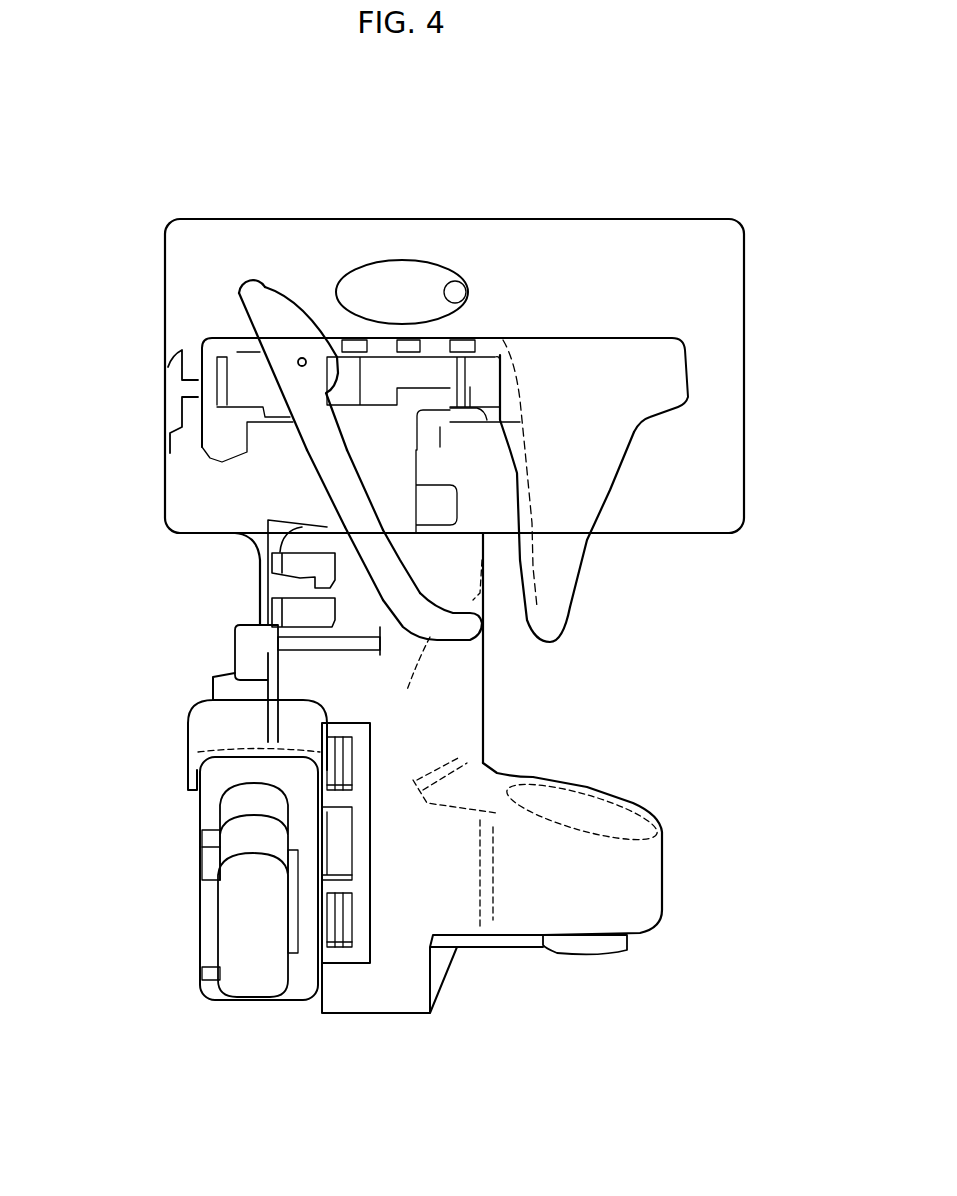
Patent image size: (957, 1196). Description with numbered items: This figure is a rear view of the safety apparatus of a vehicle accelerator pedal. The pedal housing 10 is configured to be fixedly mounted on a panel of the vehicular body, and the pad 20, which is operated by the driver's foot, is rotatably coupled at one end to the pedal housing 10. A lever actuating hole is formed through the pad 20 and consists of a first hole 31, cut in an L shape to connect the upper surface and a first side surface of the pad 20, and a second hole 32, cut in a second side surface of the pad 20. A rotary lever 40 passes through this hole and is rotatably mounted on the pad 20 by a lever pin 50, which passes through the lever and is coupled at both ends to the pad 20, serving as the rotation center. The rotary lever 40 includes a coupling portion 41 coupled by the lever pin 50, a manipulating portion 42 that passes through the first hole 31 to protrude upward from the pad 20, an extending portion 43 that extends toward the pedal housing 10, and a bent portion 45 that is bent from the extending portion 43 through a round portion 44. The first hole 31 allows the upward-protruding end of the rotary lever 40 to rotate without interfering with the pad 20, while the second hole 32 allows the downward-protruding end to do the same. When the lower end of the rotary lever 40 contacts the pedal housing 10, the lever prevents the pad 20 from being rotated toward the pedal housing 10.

The pedal housing 10 is at (467, 722).
The pad 20 is at (600, 360).
The first hole 31 is at (210, 370).
The second hole 32 is at (523, 550).
The rotary lever 40 is at (395, 418).
The coupling portion 41 is at (318, 340).
The manipulating portion 42 is at (253, 297).
The extending portion 43 is at (325, 453).
The round portion 44 is at (385, 580).
The bent portion 45 is at (470, 632).
The lever pin 50 is at (298, 362).